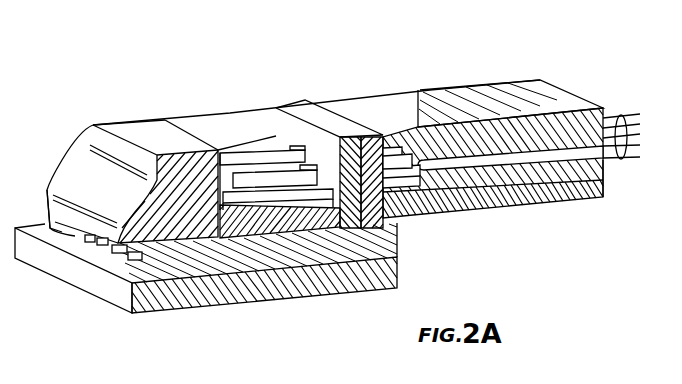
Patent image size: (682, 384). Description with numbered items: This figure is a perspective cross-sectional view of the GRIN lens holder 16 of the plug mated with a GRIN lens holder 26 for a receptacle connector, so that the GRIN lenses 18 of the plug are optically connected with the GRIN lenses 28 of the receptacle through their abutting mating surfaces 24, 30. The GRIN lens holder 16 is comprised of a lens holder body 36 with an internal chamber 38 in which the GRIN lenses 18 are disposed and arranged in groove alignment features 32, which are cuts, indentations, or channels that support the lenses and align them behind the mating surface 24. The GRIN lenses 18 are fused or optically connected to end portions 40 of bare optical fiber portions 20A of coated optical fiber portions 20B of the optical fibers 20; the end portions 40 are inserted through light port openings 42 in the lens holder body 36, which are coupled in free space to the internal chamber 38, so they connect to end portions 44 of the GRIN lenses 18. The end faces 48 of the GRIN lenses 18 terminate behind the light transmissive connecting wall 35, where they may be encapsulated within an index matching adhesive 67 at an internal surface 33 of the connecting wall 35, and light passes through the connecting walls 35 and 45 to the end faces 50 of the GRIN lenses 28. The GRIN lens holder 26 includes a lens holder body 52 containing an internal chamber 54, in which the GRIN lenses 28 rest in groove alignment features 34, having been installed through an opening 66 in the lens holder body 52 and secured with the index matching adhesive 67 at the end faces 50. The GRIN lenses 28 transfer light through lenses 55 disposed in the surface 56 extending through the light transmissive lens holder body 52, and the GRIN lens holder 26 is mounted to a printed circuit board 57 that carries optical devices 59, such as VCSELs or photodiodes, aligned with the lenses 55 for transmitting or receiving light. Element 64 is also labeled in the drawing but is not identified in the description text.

The GRIN lens holder 16 is at (507, 70).
The GRIN lenses 18 is at (427, 217).
The optical fibers 20 is at (617, 113).
The bare optical fiber portions 20A is at (478, 203).
The coated optical fiber portions 20B is at (538, 203).
The mating surface 24 is at (343, 103).
The GRIN lens holder 26 is at (150, 75).
The GRIN lenses 28 is at (276, 155).
The mating surface 30 is at (380, 257).
The groove alignment features 32 is at (400, 160).
The internal surface 33 is at (390, 150).
The groove alignment features 34 is at (225, 235).
The connecting wall 35 is at (358, 133).
The lens holder body 36 is at (532, 82).
The internal chamber 38 is at (346, 105).
The end portions 40 is at (427, 165).
The light port openings 42 is at (604, 183).
The end portions 44 is at (440, 212).
The connecting wall 45 is at (302, 150).
The end faces 48 is at (395, 190).
The end faces 50 is at (330, 160).
The lens holder body 52 is at (128, 124).
The internal chamber 54 is at (245, 130).
The lenses 55 is at (83, 246).
The surface 56 is at (47, 192).
The printed circuit board 57 is at (158, 300).
The optical devices 59 is at (90, 243).
The wall section 64 is at (375, 118).
The opening 66 is at (225, 120).
The index matching adhesive 67 is at (385, 232).